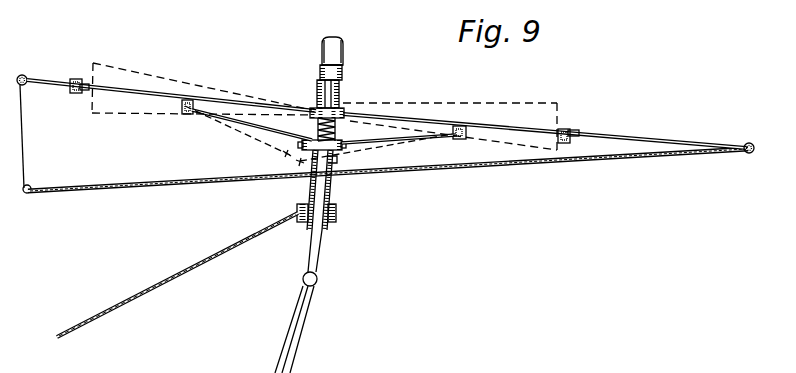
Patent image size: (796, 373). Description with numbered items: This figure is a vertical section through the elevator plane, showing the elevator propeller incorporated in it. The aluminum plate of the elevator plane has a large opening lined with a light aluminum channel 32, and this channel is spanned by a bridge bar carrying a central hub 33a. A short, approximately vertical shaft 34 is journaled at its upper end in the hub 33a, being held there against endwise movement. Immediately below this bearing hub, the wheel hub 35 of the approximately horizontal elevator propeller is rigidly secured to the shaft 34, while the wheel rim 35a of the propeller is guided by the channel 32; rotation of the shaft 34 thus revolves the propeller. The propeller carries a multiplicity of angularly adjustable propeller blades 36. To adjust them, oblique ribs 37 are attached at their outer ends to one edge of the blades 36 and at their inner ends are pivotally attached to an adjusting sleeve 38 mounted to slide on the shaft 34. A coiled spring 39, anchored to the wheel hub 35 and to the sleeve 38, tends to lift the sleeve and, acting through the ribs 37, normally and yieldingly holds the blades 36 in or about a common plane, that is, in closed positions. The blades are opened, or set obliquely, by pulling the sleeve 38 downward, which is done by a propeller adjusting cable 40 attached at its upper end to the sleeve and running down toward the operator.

The light aluminum channel 32 is at (73, 94).
The central hub 33a is at (338, 70).
The short approximately vertical shaft 34 is at (313, 255).
The wheel hub 35 is at (331, 99).
The wheel rim 35a is at (76, 84).
The propeller blades 36 is at (170, 80).
The oblique ribs 37 is at (240, 113).
The adjusting sleeve 38 is at (330, 198).
The coiled spring 39 is at (312, 122).
The propeller adjusting cable 40 is at (140, 290).